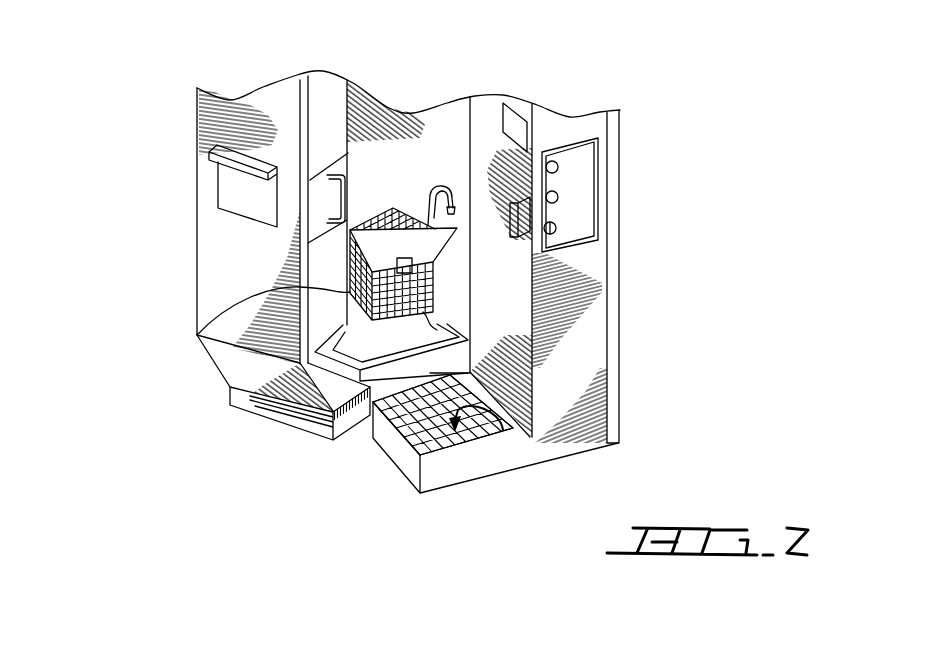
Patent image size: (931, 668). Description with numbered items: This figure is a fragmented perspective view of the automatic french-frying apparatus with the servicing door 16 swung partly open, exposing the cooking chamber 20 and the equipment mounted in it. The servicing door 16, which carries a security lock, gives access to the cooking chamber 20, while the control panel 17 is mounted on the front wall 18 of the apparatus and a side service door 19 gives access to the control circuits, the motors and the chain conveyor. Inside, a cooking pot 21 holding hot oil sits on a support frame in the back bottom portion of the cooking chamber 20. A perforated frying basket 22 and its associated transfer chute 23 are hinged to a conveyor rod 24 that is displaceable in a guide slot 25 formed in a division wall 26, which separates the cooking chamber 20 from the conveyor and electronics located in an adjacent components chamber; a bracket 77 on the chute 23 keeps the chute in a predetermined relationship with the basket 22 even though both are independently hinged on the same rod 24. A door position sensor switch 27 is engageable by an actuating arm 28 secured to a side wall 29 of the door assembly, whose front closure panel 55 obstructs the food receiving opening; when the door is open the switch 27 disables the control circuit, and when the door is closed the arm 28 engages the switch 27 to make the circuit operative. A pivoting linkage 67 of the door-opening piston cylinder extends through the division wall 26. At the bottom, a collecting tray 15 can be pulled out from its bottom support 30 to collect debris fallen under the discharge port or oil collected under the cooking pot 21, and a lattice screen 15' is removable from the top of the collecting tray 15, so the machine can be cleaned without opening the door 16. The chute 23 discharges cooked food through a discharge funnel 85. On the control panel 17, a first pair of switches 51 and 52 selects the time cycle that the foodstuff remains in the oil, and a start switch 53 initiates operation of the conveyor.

The collecting tray 15 is at (461, 446).
The lattice screen 15' is at (379, 458).
The servicing door 16 is at (227, 257).
The control panel 17 is at (588, 203).
The front wall 18 is at (587, 305).
The side service door 19 is at (617, 329).
The cooking chamber 20 is at (437, 122).
The cooking pot 21 is at (403, 380).
The perforated frying basket 22 is at (350, 276).
The transfer chute 23 is at (425, 228).
The conveyor rod 24 is at (405, 273).
The guide slot 25 is at (456, 231).
The division wall 26 is at (350, 80).
The door position sensor switch 27 is at (503, 218).
The actuating arm 28 is at (328, 172).
The side wall 29 is at (319, 181).
The bottom support 30 is at (412, 470).
The switch 51 is at (559, 162).
The switch 52 is at (516, 149).
The start switch 53 is at (549, 234).
The front closure panel 55 is at (240, 195).
The pivoting linkage 67 is at (503, 118).
The bracket 77 is at (197, 338).
The discharge funnel 85 is at (252, 405).